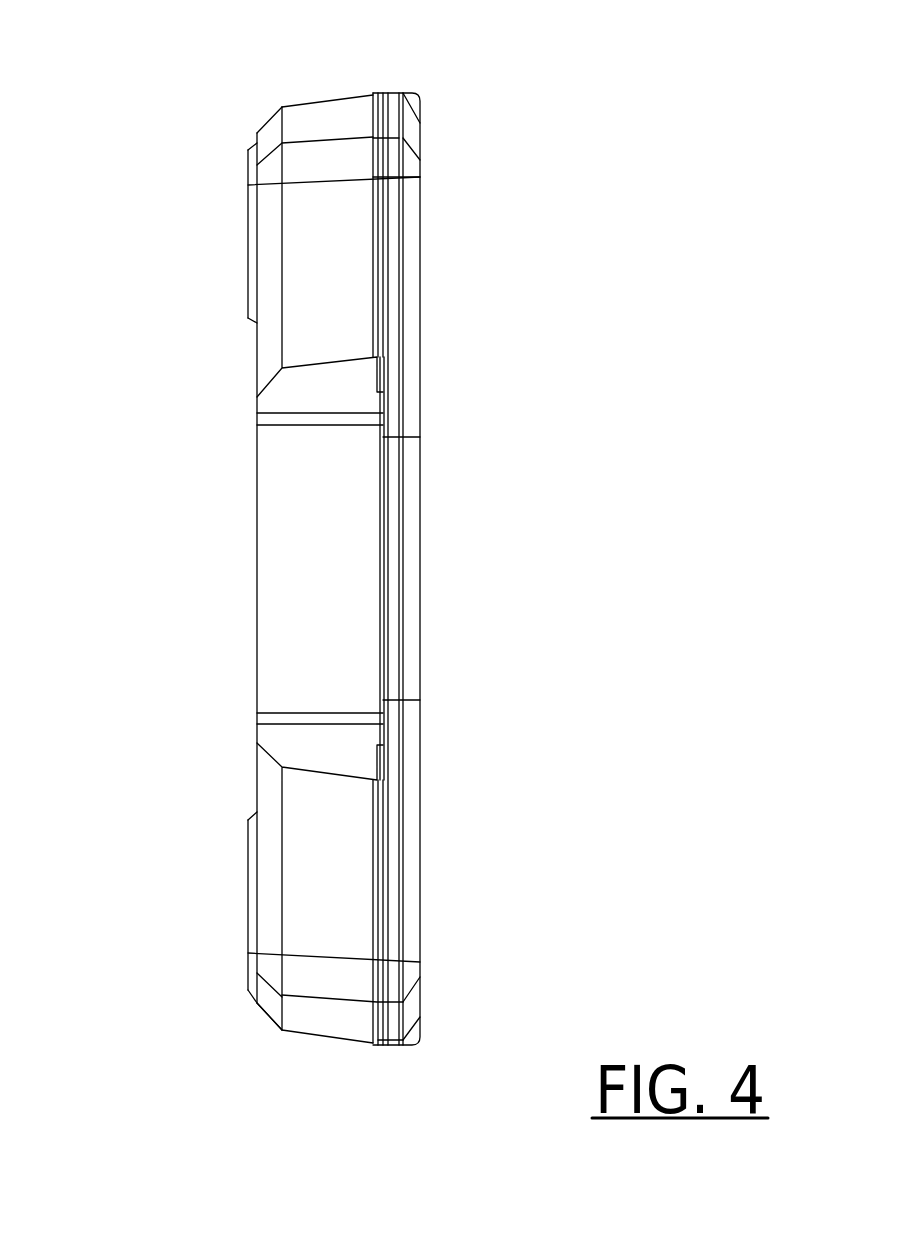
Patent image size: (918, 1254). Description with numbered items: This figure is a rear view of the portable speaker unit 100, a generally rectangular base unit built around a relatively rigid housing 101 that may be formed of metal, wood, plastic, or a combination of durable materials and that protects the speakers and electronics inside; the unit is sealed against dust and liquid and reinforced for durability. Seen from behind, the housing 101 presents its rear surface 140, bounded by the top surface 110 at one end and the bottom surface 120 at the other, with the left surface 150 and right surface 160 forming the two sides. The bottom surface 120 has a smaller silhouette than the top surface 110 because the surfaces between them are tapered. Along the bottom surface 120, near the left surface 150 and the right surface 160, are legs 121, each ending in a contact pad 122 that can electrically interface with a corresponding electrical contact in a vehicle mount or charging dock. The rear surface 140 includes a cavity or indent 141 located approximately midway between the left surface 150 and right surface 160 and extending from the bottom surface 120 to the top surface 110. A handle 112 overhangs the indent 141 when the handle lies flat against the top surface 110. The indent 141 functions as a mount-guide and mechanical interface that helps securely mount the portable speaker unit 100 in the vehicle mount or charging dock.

The portable speaker unit 100 is at (338, 538).
The housing 101 is at (303, 167).
The top surface 110 is at (431, 521).
The handle 112 is at (410, 764).
The bottom surface 120 is at (247, 639).
The legs 121 is at (252, 250).
The contact pad 122 is at (243, 260).
The rear surface 140 is at (332, 248).
The indent 141 is at (285, 540).
The left surface 150 is at (327, 1048).
The right surface 160 is at (349, 88).